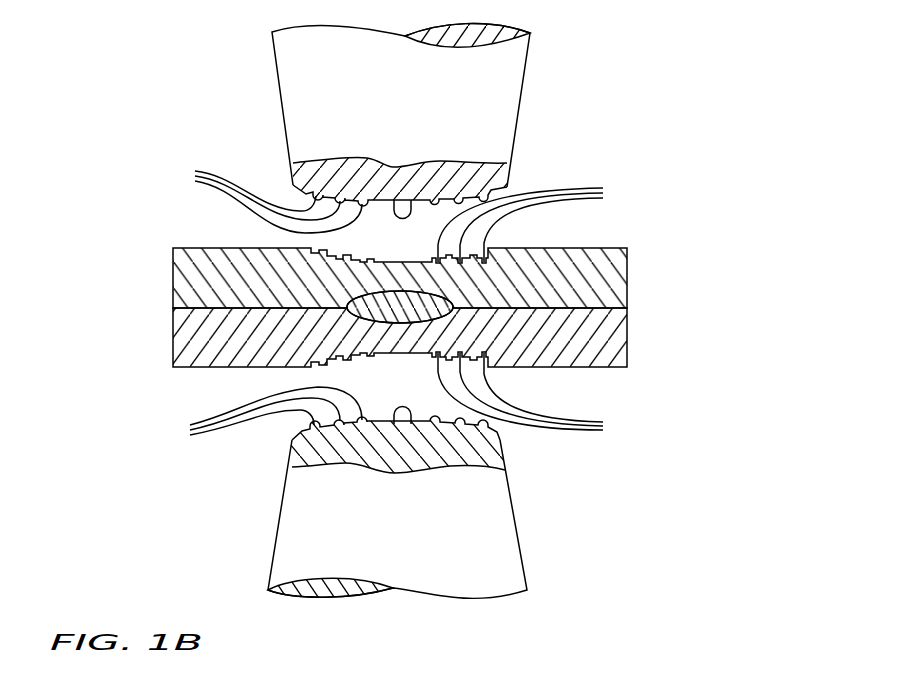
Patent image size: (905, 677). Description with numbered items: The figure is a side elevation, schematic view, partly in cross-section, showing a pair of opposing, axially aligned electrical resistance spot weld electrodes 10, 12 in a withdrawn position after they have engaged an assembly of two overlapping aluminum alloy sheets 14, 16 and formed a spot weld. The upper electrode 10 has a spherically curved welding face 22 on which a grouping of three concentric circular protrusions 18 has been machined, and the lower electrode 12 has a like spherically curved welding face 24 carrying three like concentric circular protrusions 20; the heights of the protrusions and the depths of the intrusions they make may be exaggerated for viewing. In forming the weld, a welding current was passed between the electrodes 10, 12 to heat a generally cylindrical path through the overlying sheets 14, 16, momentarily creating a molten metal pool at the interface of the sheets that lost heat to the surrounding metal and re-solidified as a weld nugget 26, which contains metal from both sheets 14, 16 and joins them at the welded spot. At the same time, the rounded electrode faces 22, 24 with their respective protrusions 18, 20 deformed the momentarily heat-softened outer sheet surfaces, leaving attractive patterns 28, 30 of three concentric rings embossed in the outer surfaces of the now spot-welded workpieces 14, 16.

The electrical resistance spot weld electrode 10 is at (418, 86).
The electrical resistance spot weld electrode 12 is at (408, 562).
The aluminum sheet 14 is at (607, 284).
The aluminum sheet 16 is at (607, 340).
The concentric circular protrusions 18 is at (266, 197).
The concentric circular protrusions 20 is at (262, 416).
The face 22 is at (394, 200).
The face 24 is at (394, 424).
The weld nugget 26 is at (378, 309).
The pattern of three concentric rings 28 is at (538, 223).
The pattern of three concentric rings 30 is at (538, 396).